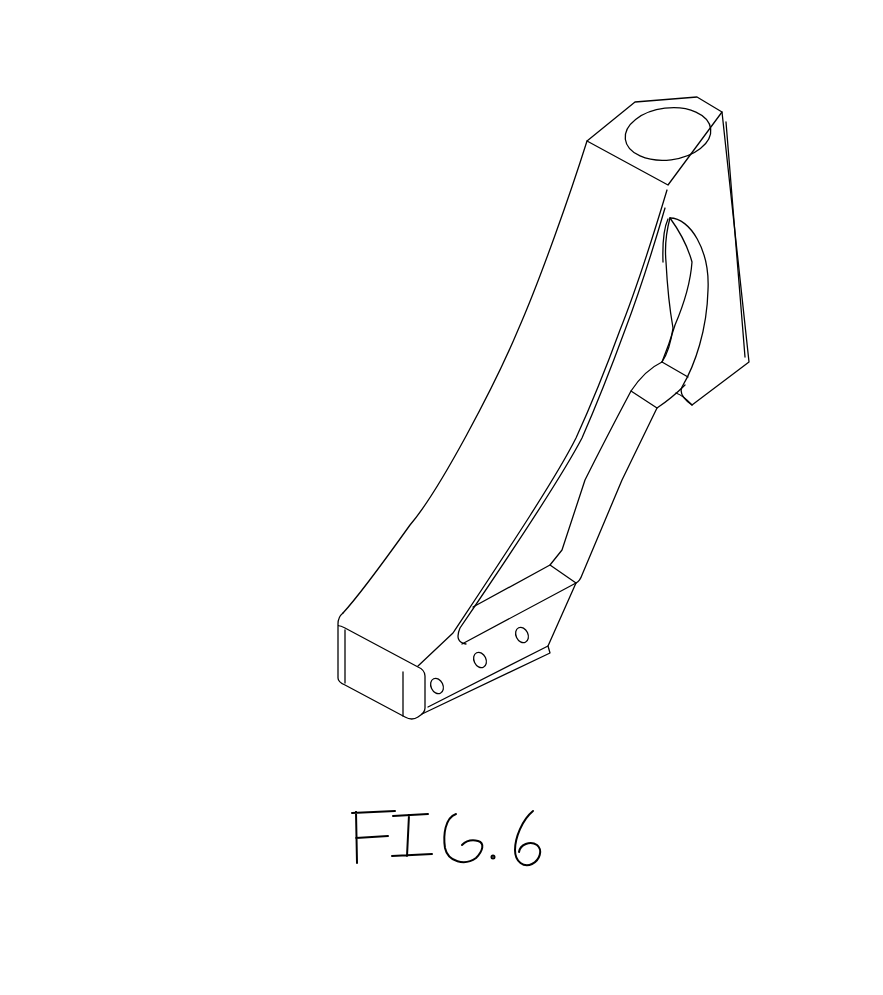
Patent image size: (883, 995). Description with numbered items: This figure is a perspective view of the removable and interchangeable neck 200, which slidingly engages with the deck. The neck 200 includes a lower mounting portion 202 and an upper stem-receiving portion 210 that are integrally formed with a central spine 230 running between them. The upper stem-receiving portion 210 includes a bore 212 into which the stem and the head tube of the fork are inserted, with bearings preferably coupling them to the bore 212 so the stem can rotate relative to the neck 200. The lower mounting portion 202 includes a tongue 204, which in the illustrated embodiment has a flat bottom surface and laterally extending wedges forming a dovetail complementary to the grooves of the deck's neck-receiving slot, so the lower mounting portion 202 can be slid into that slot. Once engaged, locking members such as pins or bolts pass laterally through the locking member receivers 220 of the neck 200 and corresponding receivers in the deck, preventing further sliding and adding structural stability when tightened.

The neck 200 is at (492, 394).
The lower mounting portion 202 is at (279, 659).
The tongue 204 is at (516, 676).
The upper stem-receiving portion 210 is at (656, 331).
The bore 212 is at (736, 113).
The locking member receivers 220 is at (550, 692).
The central spine 230 is at (454, 403).